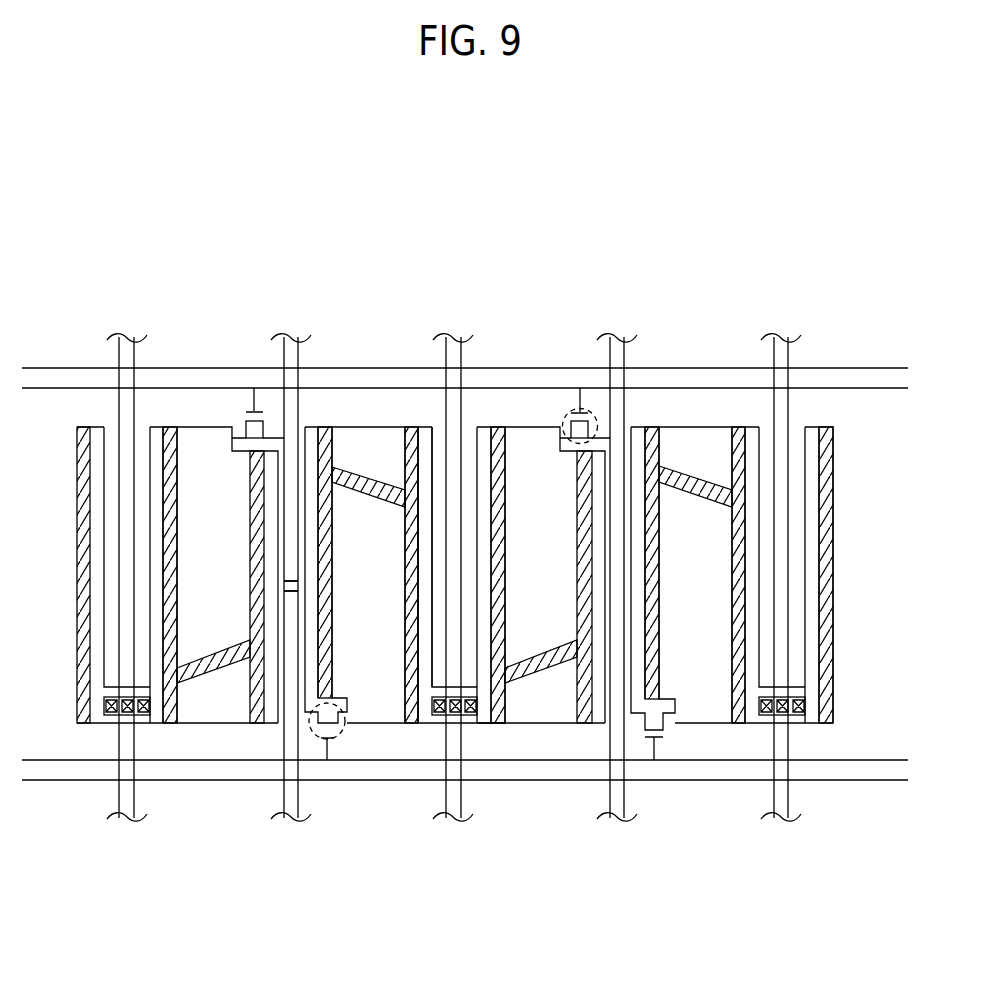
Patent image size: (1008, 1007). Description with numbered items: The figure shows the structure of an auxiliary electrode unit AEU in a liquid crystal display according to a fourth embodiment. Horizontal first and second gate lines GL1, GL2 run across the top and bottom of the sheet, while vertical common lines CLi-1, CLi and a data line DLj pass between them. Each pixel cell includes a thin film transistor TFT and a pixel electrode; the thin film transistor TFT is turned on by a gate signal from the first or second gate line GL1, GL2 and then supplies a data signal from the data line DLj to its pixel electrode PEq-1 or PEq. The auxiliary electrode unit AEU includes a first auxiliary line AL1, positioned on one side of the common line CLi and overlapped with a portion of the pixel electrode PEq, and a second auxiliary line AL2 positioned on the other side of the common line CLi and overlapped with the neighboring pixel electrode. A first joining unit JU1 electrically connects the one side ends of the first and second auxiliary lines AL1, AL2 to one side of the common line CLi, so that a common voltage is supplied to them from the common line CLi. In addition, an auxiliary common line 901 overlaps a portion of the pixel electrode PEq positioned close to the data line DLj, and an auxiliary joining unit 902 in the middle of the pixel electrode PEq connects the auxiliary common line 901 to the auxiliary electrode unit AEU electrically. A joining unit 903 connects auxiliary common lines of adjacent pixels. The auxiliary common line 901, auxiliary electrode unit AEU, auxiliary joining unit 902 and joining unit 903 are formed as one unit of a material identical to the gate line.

The auxiliary common line 901 is at (292, 586).
The auxiliary joining unit 902 is at (370, 490).
The joining unit 903 is at (262, 525).
The first gate line GL1 is at (68, 377).
The second gate line GL2 is at (45, 781).
The common line CLi-1 is at (128, 797).
The common line CLi is at (457, 796).
The data line DLj is at (293, 797).
The thin film transistor TFT is at (598, 424).
The first joining unit JU1 is at (477, 712).
The auxiliary electrode unit AEU is at (465, 471).
The first auxiliary line AL1 is at (428, 440).
The second auxiliary line AL2 is at (486, 437).
The pixel electrode PEq-1 is at (217, 522).
The pixel electrode PEq is at (405, 522).